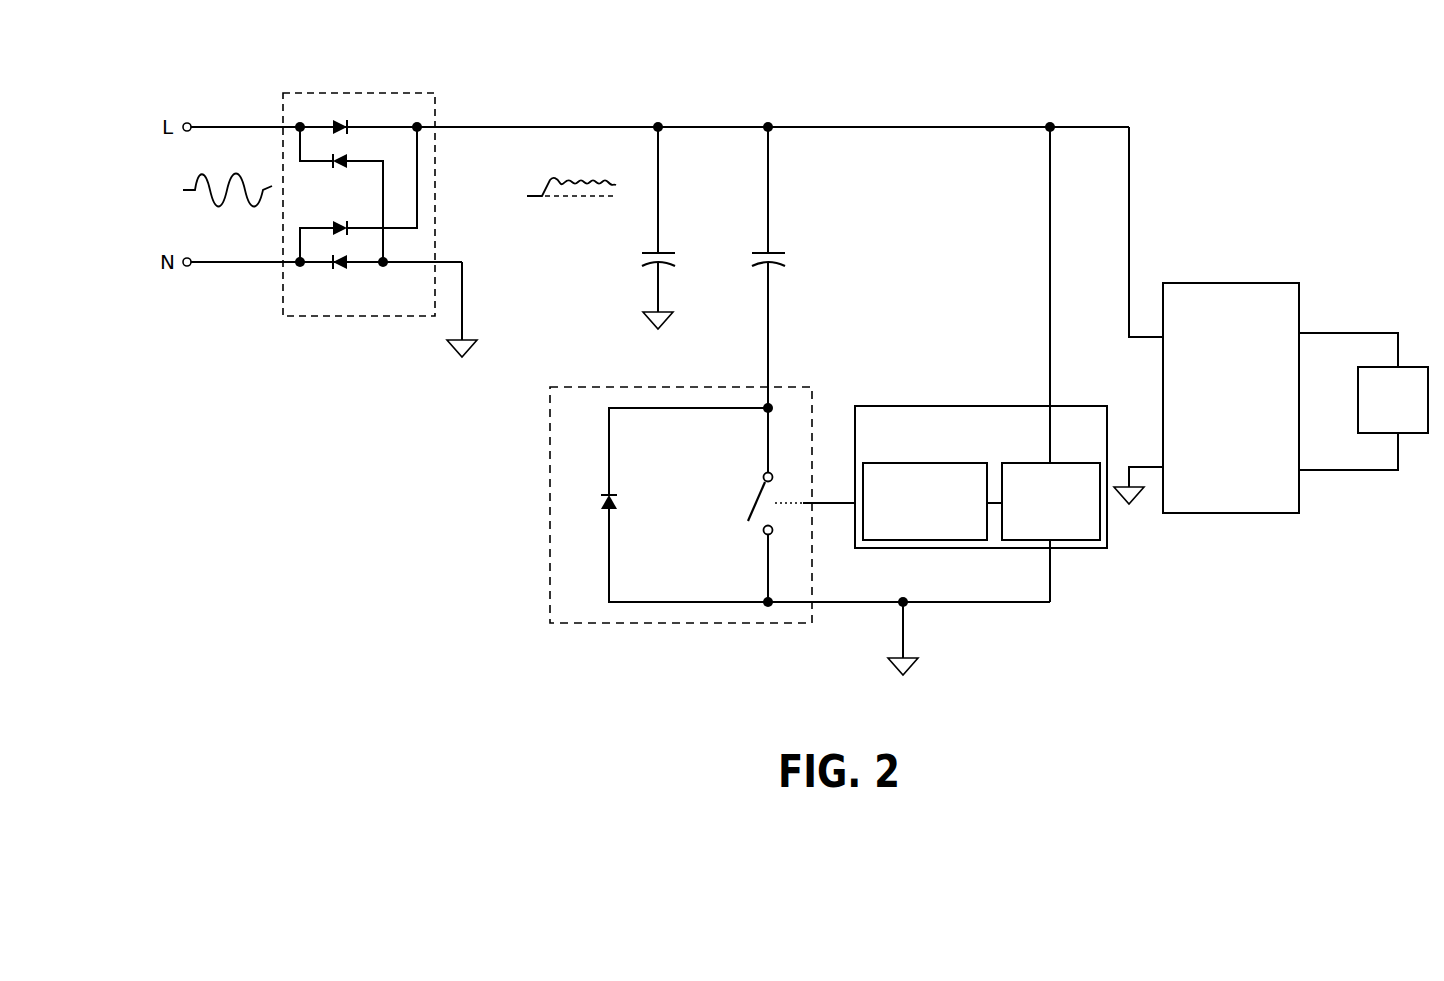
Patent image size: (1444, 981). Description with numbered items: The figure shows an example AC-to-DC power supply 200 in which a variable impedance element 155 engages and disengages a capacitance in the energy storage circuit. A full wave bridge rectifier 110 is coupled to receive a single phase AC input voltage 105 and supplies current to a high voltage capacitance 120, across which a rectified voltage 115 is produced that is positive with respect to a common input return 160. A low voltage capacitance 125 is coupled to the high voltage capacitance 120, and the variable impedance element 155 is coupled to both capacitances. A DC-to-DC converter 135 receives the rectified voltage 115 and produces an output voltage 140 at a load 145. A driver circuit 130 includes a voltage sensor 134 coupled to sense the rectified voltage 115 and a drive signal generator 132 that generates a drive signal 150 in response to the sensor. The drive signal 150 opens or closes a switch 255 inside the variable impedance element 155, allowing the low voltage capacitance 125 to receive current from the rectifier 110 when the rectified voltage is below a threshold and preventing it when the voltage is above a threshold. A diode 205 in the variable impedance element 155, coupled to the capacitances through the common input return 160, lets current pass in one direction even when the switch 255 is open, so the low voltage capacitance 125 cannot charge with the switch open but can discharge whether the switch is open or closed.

The AC input voltage 105 is at (155, 180).
The bridge rectifier 110 is at (285, 92).
The rectified voltage VRECT 115 is at (492, 188).
The high voltage capacitance CHV 120 is at (650, 247).
The low voltage capacitance CLV 125 is at (780, 250).
The driver circuit 130 is at (981, 475).
The drive signal generator 132 is at (950, 540).
The voltage sensor 134 is at (1035, 540).
The DC-to-DC converter 135 is at (1248, 418).
The output voltage VO 140 is at (1330, 391).
The load 145 is at (1414, 422).
The drive signal 150 is at (834, 503).
The variable impedance element ZV 155 is at (790, 486).
The common input return 160 is at (648, 330).
The AC-to-DC power supply 200 is at (335, 478).
The diode D1 205 is at (602, 448).
The switch S1 255 is at (755, 487).